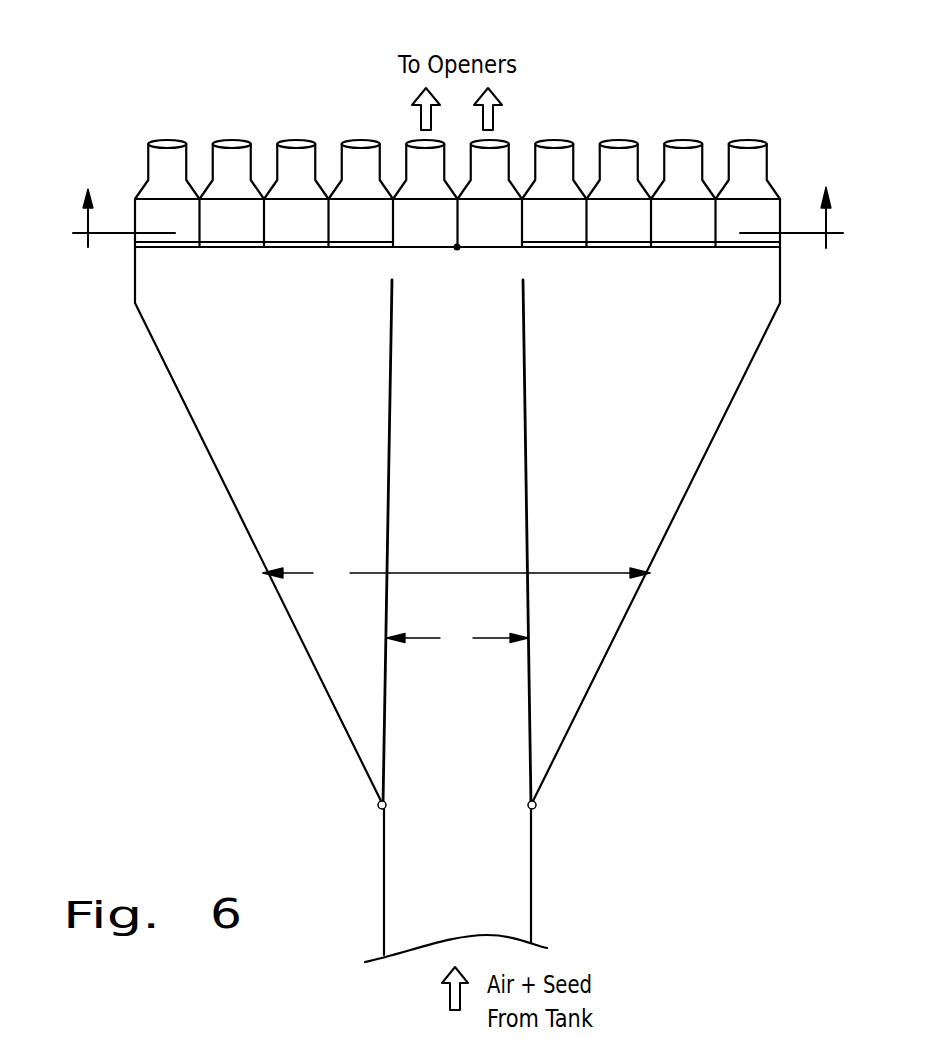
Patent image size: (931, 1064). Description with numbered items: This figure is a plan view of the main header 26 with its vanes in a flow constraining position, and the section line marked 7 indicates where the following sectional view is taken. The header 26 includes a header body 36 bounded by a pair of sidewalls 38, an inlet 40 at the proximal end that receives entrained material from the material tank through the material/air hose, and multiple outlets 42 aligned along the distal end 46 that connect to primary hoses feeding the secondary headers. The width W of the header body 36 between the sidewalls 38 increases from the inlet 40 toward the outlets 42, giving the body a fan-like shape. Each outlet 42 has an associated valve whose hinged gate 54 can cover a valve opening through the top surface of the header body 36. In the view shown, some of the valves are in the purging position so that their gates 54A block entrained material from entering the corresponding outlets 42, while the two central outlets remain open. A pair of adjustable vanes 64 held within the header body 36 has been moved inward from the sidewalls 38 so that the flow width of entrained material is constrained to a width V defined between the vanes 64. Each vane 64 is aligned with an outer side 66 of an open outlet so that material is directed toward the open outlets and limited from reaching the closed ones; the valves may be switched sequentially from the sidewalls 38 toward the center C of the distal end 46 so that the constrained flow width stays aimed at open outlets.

The main header 26 is at (428, 522).
The header body 36 is at (531, 868).
The sidewalls 38 is at (241, 525).
The inlet 40 is at (440, 828).
The outlets 42 is at (232, 141).
The distal end 46 is at (135, 244).
The gate 54 is at (412, 232).
The gates in purging position 54A is at (170, 247).
The adjustable vanes 64 is at (390, 418).
The outer side of open outlet 66 is at (393, 223).
The section line of FIG. 7 is at (458, 203).